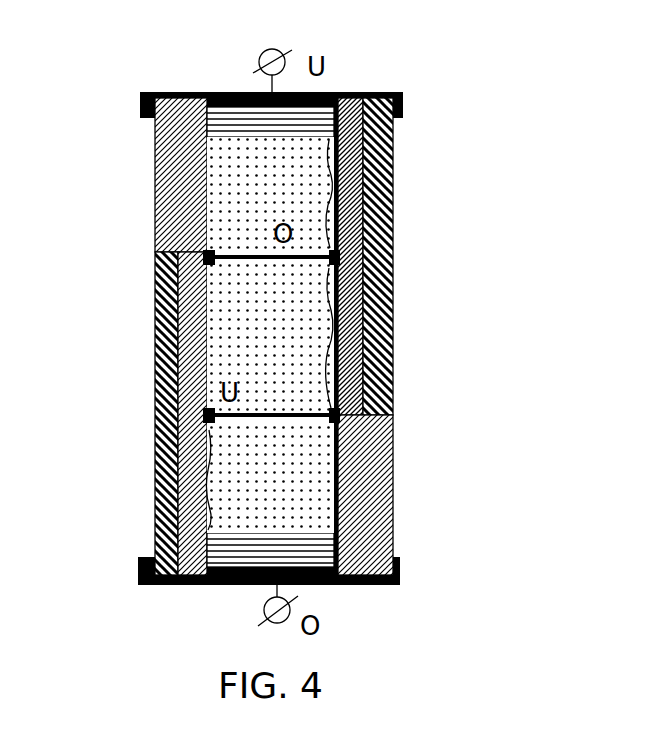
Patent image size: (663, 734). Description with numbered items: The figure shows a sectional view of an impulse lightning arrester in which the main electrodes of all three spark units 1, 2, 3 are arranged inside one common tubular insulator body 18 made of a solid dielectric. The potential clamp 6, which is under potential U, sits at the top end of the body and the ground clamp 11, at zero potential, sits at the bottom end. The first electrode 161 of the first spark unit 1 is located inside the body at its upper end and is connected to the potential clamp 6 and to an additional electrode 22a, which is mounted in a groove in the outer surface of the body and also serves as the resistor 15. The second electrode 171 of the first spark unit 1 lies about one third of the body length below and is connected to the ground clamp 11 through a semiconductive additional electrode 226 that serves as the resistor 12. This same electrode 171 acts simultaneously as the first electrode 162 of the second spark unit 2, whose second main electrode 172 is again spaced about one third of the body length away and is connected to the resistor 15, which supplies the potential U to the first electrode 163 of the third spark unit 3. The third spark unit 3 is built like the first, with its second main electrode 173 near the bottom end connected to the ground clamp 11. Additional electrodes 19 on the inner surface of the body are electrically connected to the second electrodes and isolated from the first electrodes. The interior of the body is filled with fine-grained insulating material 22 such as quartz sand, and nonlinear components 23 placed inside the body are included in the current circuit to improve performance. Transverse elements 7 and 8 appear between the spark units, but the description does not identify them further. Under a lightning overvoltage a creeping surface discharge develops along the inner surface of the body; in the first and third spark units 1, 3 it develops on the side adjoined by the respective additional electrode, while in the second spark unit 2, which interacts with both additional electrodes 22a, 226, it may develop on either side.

The first spark unit 1 is at (312, 176).
The second spark unit 2 is at (305, 340).
The third spark unit 3 is at (240, 488).
The potential clamp 6 is at (262, 53).
The first partition plate 7 is at (247, 255).
The second partition plate 8 is at (290, 417).
The ground clamp 11 is at (264, 608).
The resistor 12 is at (112, 413).
The resistor 15 is at (421, 256).
The first electrode of the first spark unit 161 is at (393, 128).
The first electrode of the second spark unit 162 is at (393, 272).
The first electrode of the third spark unit 163 is at (155, 414).
The second electrode of the first spark unit 171 is at (438, 256).
The second main electrode of the second spark unit 172 is at (393, 430).
The second main electrode of the third spark unit 173 is at (192, 585).
The tubular insulator body 18 is at (393, 243).
The additional electrode 19 is at (393, 207).
The fine-grained insulating material 22 is at (233, 170).
The additional electrode 22a is at (393, 160).
The additional electrode 226 is at (155, 312).
The nonlinear component 23 is at (292, 120).